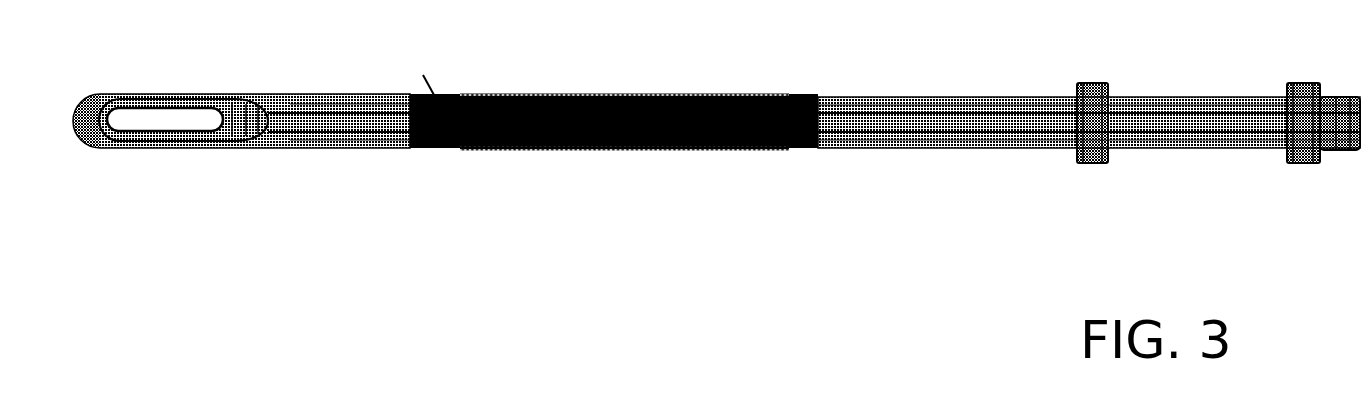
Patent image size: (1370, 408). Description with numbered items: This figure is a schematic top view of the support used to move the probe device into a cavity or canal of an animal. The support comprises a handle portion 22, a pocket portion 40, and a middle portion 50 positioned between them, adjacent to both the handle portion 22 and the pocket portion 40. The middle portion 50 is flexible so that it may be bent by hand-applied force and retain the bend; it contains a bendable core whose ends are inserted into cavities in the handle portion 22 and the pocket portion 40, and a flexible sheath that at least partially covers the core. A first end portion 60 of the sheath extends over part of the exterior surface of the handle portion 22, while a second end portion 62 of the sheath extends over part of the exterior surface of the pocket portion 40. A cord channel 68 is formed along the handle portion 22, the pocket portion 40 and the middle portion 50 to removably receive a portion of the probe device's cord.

The pocket portion 40 is at (312, 150).
The second end portion of the sheath 62 is at (437, 150).
The middle portion 50 is at (617, 150).
The cord channel 68 is at (720, 150).
The first end portion of the sheath 60 is at (800, 150).
The handle portion 22 is at (935, 150).